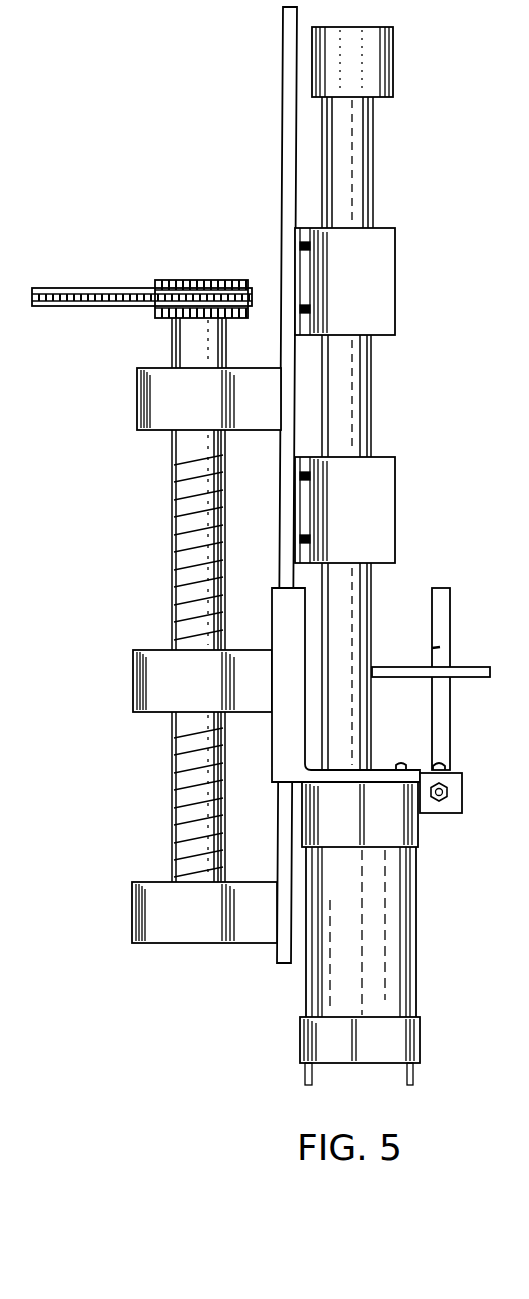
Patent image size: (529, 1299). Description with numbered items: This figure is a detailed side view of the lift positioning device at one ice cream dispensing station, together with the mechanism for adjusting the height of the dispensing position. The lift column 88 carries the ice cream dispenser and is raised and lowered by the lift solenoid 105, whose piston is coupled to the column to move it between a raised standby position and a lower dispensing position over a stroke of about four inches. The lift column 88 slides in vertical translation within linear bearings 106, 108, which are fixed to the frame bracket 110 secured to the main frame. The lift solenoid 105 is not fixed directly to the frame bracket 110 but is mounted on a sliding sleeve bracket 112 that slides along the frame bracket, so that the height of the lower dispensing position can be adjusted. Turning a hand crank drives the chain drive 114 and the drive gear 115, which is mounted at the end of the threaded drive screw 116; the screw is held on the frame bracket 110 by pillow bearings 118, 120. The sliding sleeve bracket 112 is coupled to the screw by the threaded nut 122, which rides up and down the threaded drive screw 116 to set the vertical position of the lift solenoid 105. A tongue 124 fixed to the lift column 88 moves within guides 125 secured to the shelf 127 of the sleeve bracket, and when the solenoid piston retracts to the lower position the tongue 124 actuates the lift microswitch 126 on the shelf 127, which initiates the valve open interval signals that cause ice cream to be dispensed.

The lift column 88 is at (375, 143).
The lift solenoid 105 is at (400, 950).
The linear bearing 106 is at (380, 507).
The linear bearing 108 is at (395, 268).
The frame bracket 110 is at (283, 88).
The sliding sleeve bracket 112 is at (272, 610).
The chain drive 114 is at (77, 288).
The drive gear 115 is at (205, 280).
The threaded drive screw 116 is at (172, 528).
The pillow bearing 118 is at (137, 392).
The pillow bearing 120 is at (132, 908).
The threaded nut 122 is at (133, 677).
The tongue 124 is at (462, 667).
The guides 125 is at (438, 588).
The lift microswitch 126 is at (441, 764).
The shelf 127 is at (458, 775).